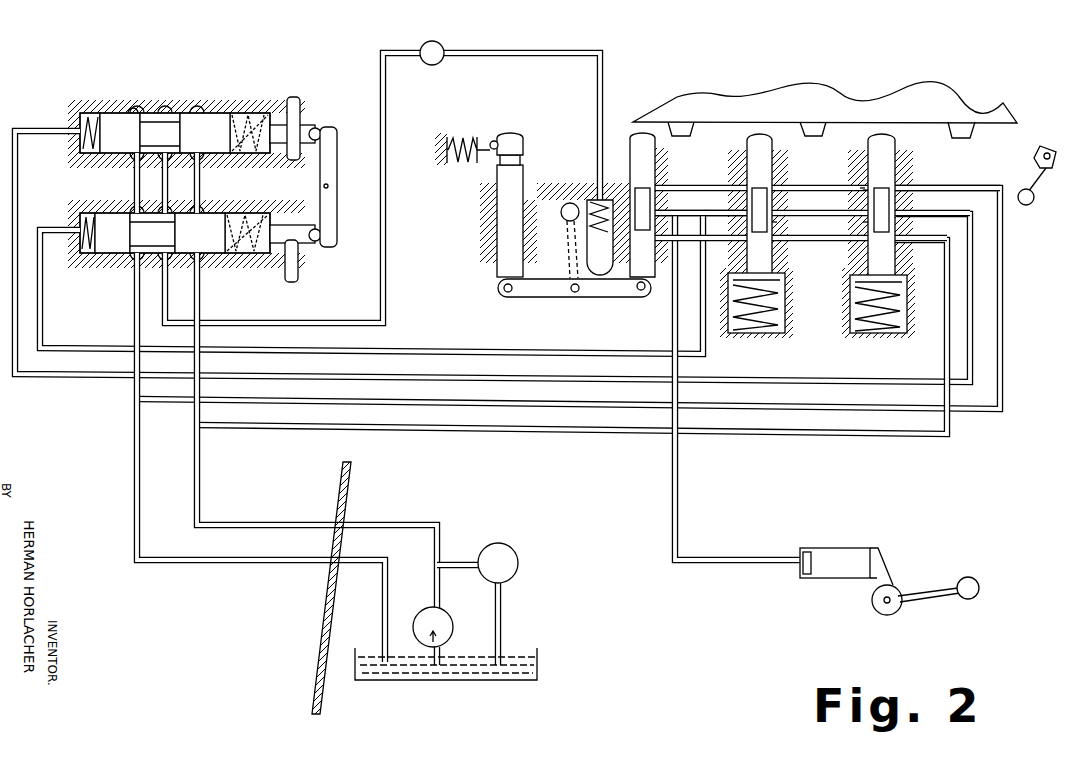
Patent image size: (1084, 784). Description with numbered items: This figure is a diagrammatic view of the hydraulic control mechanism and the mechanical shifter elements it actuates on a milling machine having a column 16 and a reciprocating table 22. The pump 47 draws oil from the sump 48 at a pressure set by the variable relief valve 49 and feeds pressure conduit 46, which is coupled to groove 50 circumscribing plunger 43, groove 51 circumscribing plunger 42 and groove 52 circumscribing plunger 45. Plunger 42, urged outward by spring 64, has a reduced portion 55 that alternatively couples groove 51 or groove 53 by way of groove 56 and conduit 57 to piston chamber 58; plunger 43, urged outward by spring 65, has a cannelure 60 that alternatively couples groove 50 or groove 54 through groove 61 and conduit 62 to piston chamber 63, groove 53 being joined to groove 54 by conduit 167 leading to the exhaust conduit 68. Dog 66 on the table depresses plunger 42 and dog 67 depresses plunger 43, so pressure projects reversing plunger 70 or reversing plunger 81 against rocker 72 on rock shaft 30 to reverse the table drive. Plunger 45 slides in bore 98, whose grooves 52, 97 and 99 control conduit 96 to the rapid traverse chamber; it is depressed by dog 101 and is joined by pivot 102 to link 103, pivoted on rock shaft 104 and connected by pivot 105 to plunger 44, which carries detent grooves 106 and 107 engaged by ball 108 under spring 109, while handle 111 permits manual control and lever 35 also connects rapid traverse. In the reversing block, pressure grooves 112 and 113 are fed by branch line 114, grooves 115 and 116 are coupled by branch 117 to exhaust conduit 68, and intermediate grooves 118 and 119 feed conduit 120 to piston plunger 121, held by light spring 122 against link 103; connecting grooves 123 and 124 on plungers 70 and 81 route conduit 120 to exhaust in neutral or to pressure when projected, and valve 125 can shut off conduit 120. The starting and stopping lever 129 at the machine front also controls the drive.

The column 16 is at (330, 485).
The table 22 is at (912, 104).
The rock shaft 30 is at (336, 193).
The rapid traverse control lever 35 is at (981, 580).
The control plunger 42 is at (772, 160).
The control plunger 43 is at (895, 160).
The plunger 44 is at (490, 240).
The plunger 45 is at (656, 158).
The pressure conduit 46 is at (885, 436).
The pump 47 is at (450, 610).
The sump 48 is at (520, 662).
The variable relief valve 49 is at (522, 563).
The groove 50 is at (860, 244).
The groove 51 is at (778, 238).
The groove 52 is at (663, 240).
The groove 53 is at (778, 208).
The groove 54 is at (866, 194).
The reduced portion 55 is at (776, 222).
The groove 56 is at (742, 210).
The conduit 57 is at (418, 350).
The piston chamber 58 is at (80, 252).
The cannelure 60 is at (866, 222).
The groove 61 is at (910, 212).
The conduit 62 is at (748, 380).
The piston chamber 63 is at (90, 156).
The spring 64 is at (752, 338).
The spring 65 is at (870, 338).
The dog 66 is at (820, 134).
The dog 67 is at (966, 138).
The exhaust conduit 68 is at (135, 528).
The reversing plunger 70 is at (293, 203).
The rocker 72 is at (337, 163).
The reversing plunger 81 is at (238, 115).
The conduit 96 is at (676, 507).
The groove 97 is at (668, 211).
The bore 98 is at (595, 200).
The groove 99 is at (658, 186).
The dog 101 is at (688, 134).
The pivot 102 is at (640, 292).
The link 103 is at (612, 292).
The rock shaft 104 is at (575, 292).
The pivot 105 is at (507, 292).
The detent groove 106 is at (528, 161).
The detent groove 107 is at (526, 150).
The detent ball 108 is at (494, 141).
The spring 109 is at (458, 165).
The handle 111 is at (560, 212).
The pressure groove 112 is at (205, 258).
The pressure groove 113 is at (200, 110).
The branch pressure line 114 is at (197, 425).
The groove 115 is at (133, 111).
The groove 116 is at (127, 263).
The branch 117 is at (137, 399).
The groove 118 is at (166, 112).
The groove 119 is at (197, 176).
The conduit 120 is at (398, 85).
The piston plunger 121 is at (585, 244).
The spring 122 is at (592, 198).
The connecting groove 123 is at (134, 253).
The groove 124 is at (140, 112).
The valve 125 is at (446, 45).
The starting and stopping lever 129 is at (1030, 204).
The conduit 167 is at (855, 184).